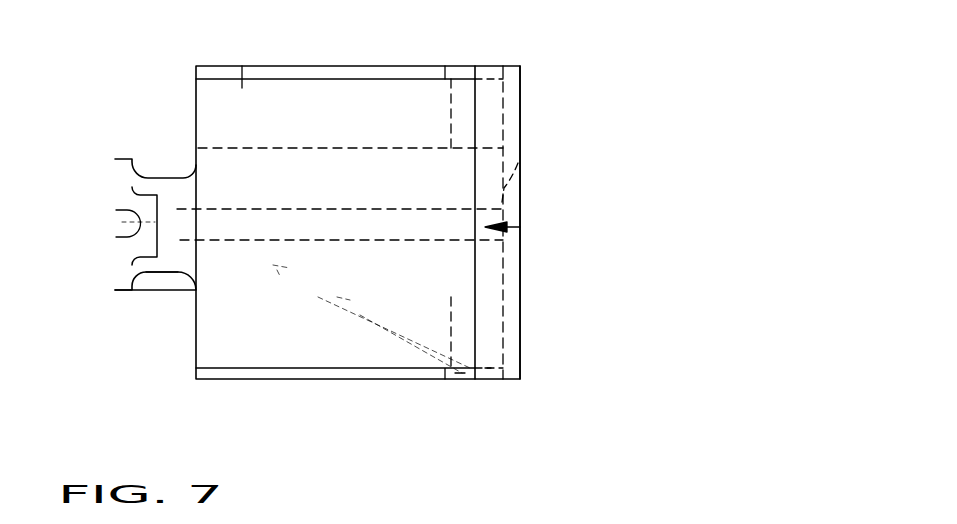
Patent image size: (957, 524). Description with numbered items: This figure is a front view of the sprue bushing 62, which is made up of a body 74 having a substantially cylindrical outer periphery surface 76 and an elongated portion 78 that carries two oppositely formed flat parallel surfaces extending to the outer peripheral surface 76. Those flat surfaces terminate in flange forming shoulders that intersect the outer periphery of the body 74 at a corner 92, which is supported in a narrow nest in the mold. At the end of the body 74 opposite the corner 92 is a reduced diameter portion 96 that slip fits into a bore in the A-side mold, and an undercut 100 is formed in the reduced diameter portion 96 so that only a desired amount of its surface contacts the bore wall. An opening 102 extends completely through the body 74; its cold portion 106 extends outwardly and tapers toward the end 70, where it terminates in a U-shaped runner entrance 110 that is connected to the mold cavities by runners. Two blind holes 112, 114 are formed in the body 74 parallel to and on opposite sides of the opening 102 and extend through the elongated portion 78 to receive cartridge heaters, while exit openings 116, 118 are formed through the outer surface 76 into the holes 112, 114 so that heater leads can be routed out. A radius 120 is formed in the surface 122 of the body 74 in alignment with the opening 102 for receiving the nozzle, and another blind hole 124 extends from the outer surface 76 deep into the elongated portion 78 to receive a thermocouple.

The sprue bushing 62 is at (391, 46).
The end 70 is at (114, 182).
The U-shaped runner entrance 110 is at (128, 227).
The cold portion 106 is at (164, 220).
The reduced diameter portion 96 is at (123, 292).
The undercut 100 is at (165, 275).
The blind hole 114 is at (243, 68).
The outer periphery surface 76 is at (355, 76).
The exit opening 118 is at (492, 68).
The surface 122 is at (521, 97).
The radius 120 is at (527, 183).
The opening 102 is at (522, 225).
The corner 92 is at (475, 275).
The blind hole 124 is at (360, 315).
The elongated portion 78 is at (228, 358).
The body 74 is at (275, 381).
The blind hole 112 is at (352, 367).
The exit opening 116 is at (493, 380).